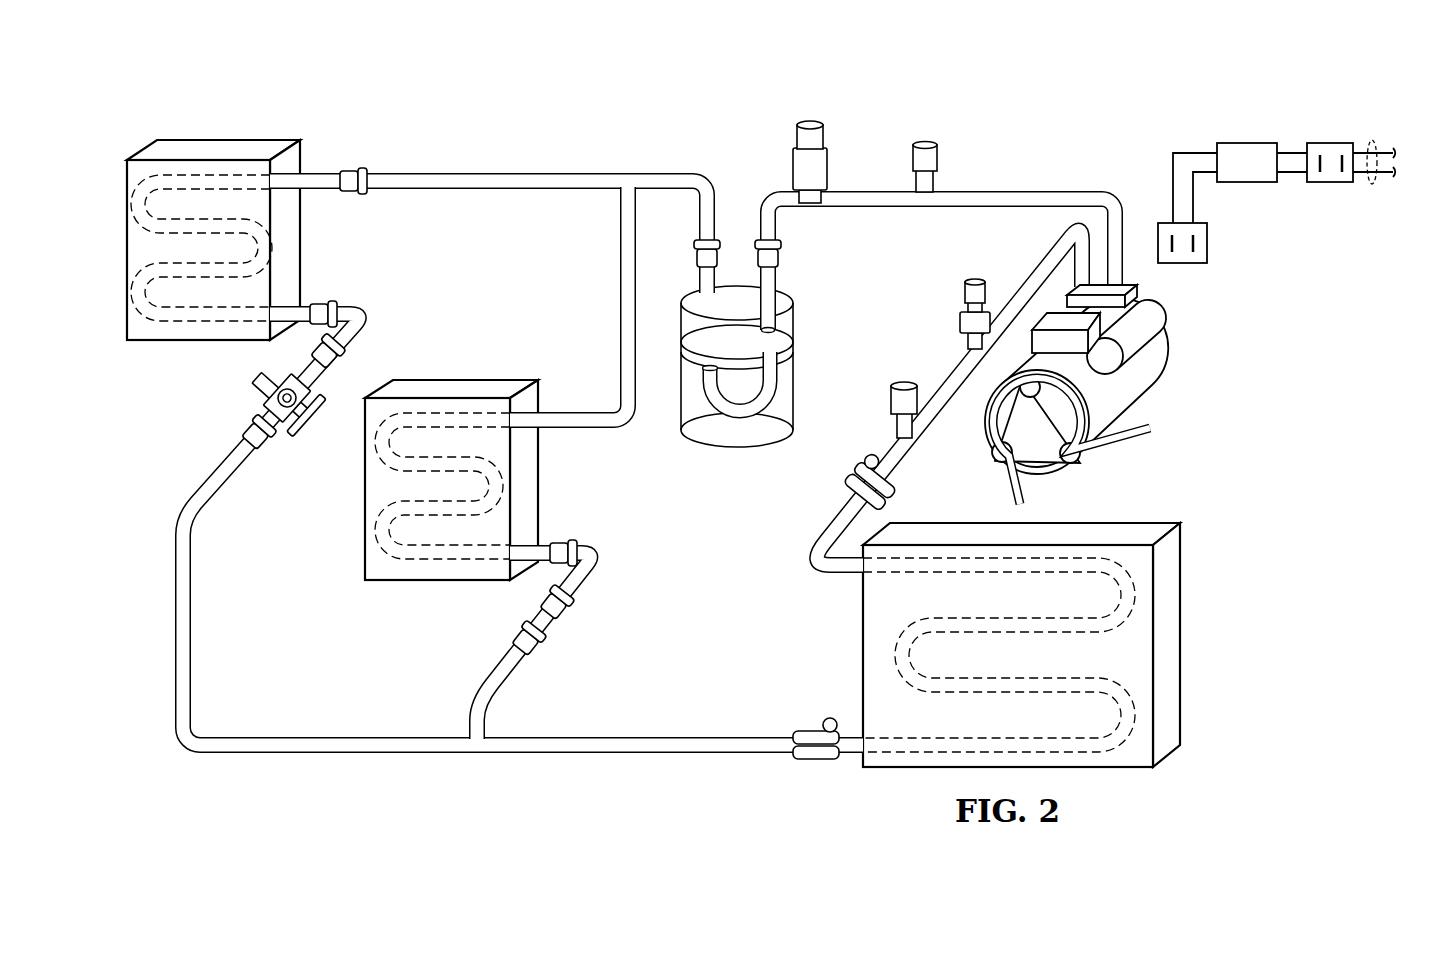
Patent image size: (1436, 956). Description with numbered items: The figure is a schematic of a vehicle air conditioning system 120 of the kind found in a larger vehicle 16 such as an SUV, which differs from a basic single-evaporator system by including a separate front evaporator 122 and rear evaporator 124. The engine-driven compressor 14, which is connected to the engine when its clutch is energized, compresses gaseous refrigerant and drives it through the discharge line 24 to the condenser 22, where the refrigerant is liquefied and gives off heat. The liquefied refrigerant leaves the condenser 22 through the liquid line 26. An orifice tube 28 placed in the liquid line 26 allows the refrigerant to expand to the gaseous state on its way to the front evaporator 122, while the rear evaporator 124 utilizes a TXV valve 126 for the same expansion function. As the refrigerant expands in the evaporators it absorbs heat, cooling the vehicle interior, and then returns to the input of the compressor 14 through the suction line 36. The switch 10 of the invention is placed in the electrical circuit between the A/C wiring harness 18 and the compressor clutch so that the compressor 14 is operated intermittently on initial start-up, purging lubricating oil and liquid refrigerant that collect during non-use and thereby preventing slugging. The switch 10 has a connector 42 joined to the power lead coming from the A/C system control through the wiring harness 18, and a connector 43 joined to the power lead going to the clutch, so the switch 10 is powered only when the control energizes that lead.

The switch 10 is at (1248, 141).
The compressor 14 is at (1170, 338).
The vehicle 16 is at (716, 568).
The A/C wiring harness 18 is at (1370, 140).
The condenser 22 is at (1187, 642).
The discharge line 24 is at (878, 451).
The liquid line 26 is at (611, 756).
The orifice tube 28 is at (568, 612).
The suction line 36 is at (1030, 192).
The connector 42 is at (1330, 143).
The connector 43 is at (1209, 242).
The A/C system 120 is at (609, 144).
The front evaporator 122 is at (468, 379).
The rear evaporator 124 is at (228, 139).
The TXV valve 126 is at (292, 432).